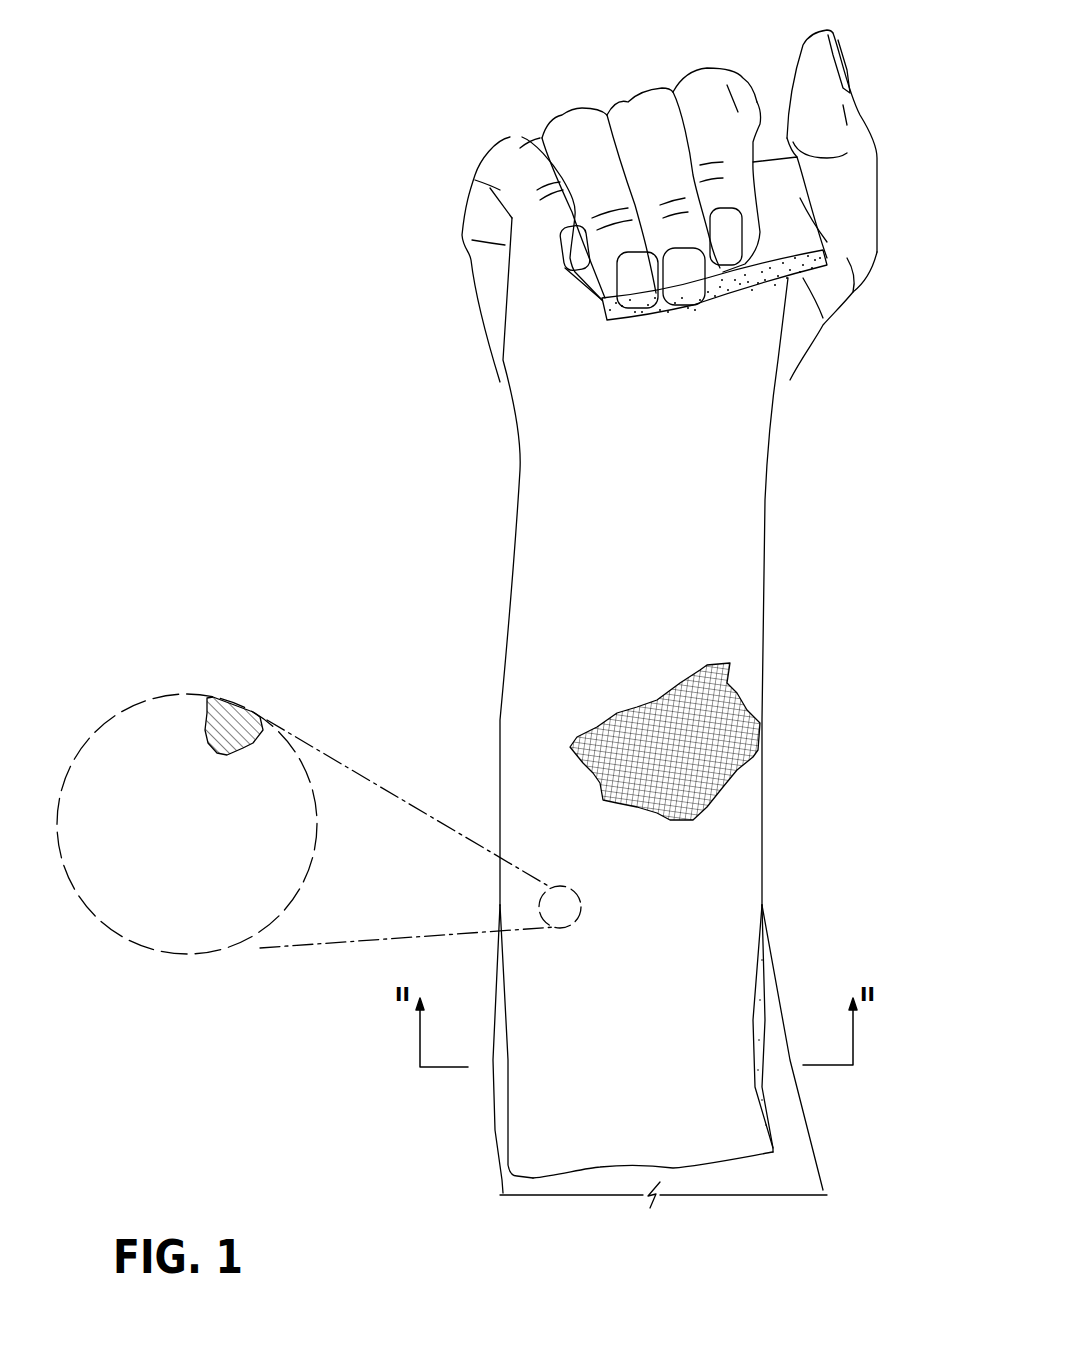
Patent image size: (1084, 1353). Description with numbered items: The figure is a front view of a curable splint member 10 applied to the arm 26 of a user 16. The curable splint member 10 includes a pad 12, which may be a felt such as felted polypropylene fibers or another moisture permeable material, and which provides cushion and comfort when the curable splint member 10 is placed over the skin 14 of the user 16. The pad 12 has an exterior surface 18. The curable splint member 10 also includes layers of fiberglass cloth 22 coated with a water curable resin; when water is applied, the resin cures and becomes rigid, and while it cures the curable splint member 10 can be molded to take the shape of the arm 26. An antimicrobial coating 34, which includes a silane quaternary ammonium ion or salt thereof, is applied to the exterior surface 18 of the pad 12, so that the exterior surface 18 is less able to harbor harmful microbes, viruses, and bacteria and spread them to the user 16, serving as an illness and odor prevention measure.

The curable splint member 10 is at (512, 567).
The pad 12 is at (563, 477).
The skin 14 is at (768, 1172).
The user 16 is at (817, 1178).
The exterior surface 18 is at (722, 522).
The fiberglass cloth 22 is at (717, 717).
The arm 26 is at (632, 1180).
The antimicrobial coating 34 is at (212, 910).